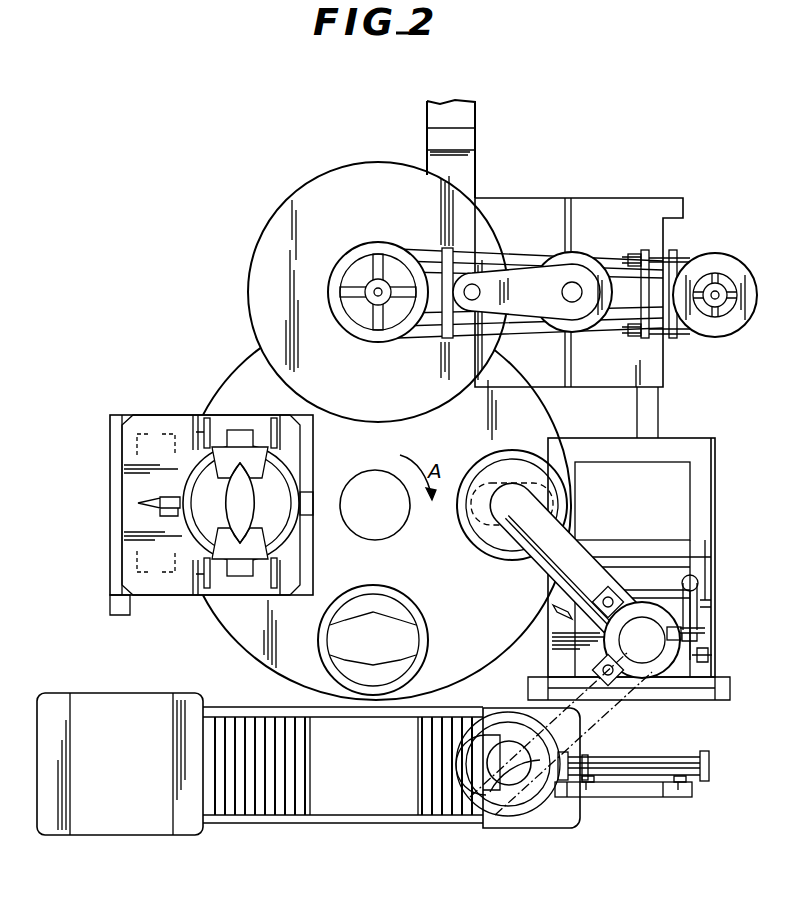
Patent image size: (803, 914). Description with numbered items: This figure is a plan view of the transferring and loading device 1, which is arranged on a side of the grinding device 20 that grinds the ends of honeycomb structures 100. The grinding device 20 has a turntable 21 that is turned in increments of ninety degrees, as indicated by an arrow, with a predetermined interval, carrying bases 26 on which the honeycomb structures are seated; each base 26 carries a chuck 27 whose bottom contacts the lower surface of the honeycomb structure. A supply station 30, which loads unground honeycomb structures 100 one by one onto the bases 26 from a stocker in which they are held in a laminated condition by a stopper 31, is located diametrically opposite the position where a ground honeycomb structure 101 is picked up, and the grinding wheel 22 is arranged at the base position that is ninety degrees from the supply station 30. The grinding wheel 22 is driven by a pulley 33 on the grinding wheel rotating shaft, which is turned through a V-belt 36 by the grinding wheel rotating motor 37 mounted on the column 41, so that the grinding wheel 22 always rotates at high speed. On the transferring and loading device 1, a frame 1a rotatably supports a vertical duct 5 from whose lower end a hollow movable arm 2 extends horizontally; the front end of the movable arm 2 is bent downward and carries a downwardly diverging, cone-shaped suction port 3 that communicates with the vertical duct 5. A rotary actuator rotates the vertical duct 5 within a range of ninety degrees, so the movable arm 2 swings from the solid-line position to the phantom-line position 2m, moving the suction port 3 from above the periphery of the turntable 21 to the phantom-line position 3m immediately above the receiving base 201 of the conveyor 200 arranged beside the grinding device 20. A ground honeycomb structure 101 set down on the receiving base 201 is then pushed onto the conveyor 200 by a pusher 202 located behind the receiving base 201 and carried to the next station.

The transferring and loading device 1 is at (719, 633).
The frame 1a is at (717, 570).
The movable arm 2 is at (585, 577).
The phantom-line position of movable arm 2m is at (600, 706).
The suction port 3 is at (545, 458).
The phantom-line position of suction port 3m is at (520, 808).
The vertical duct 5 is at (655, 650).
The grinding device 20 is at (571, 188).
The turntable 21 is at (258, 353).
The grinding wheel 22 is at (262, 230).
The base 26 is at (427, 628).
The chuck 27 is at (400, 668).
The supply station 30 is at (149, 413).
The stopper 31 is at (210, 548).
The pulley 33 is at (345, 248).
The V-belt 36 is at (385, 243).
The grinding wheel rotating motor 37 is at (723, 253).
The column 41 is at (583, 332).
The honeycomb structure 100 is at (230, 512).
The ground honeycomb structure 101 is at (488, 522).
The conveyor 200 is at (410, 824).
The receiving base 201 is at (572, 828).
The pusher 202 is at (647, 797).